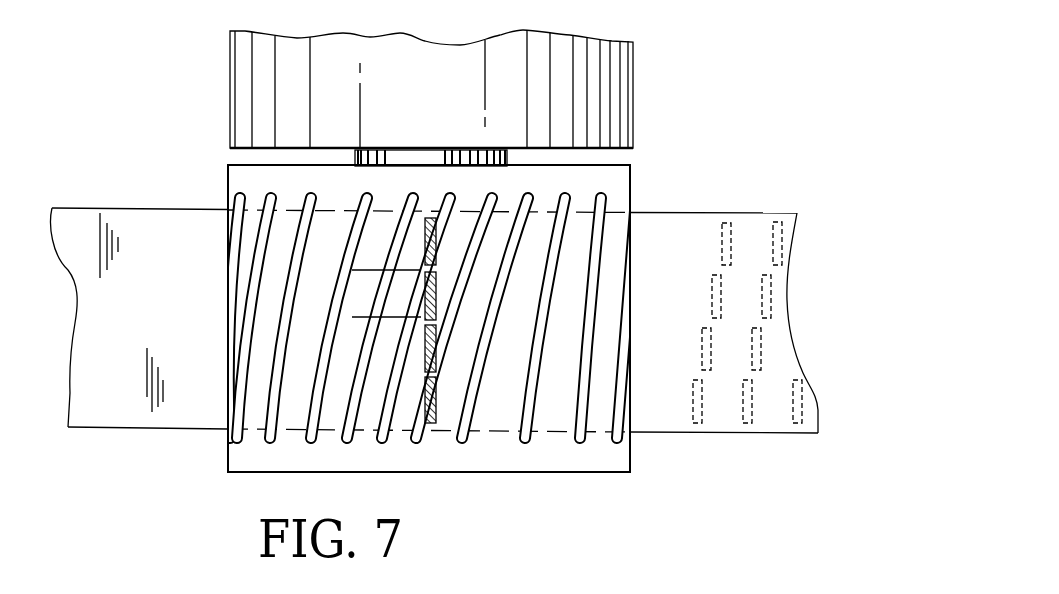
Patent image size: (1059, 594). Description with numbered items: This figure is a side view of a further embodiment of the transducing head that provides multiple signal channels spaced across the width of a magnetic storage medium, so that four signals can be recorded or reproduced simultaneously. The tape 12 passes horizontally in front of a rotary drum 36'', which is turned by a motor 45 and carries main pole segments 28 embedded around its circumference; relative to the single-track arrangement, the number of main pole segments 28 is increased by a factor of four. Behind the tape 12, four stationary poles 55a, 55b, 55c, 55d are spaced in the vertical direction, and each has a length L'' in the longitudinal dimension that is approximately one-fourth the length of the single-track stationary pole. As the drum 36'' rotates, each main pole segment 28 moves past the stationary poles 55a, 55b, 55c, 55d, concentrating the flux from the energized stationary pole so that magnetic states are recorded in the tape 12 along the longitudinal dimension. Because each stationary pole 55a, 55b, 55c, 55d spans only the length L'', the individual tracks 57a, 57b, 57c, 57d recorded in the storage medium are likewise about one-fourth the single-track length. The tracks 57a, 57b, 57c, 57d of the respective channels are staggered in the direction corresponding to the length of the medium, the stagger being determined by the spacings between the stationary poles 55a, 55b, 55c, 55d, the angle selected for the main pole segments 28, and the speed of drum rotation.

The tape 12 is at (172, 213).
The main pole segments 28 is at (278, 402).
The rotary drum 36'' is at (364, 339).
The motor 45 is at (594, 76).
The stationary pole 55a is at (438, 210).
The stationary pole 55b is at (438, 273).
The stationary pole 55c is at (440, 333).
The stationary pole 55d is at (438, 397).
The track 57a is at (777, 250).
The track 57b is at (768, 300).
The track 57c is at (763, 353).
The track 57d is at (753, 397).
The length L'' is at (386, 293).